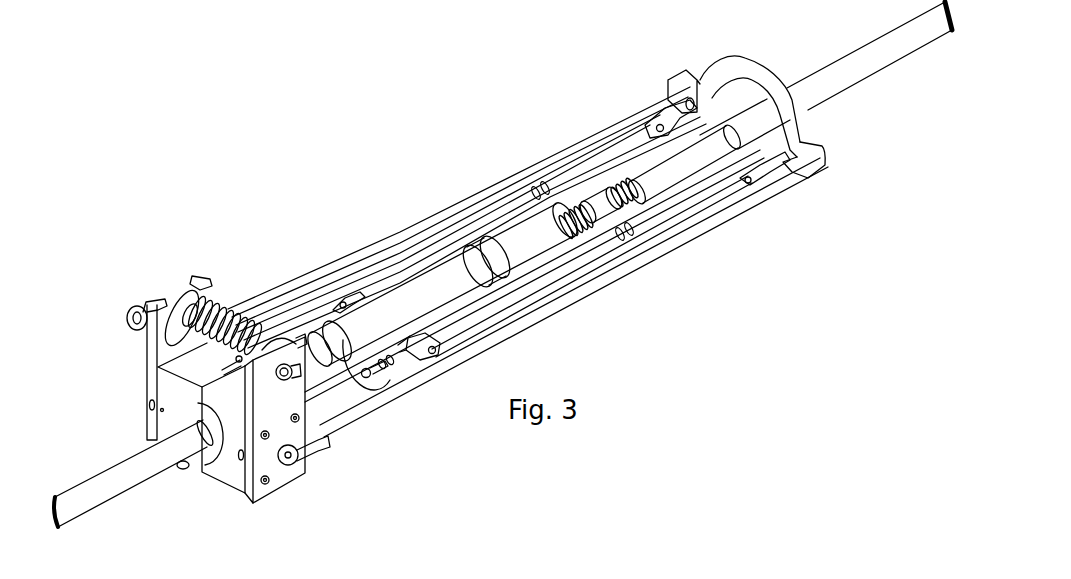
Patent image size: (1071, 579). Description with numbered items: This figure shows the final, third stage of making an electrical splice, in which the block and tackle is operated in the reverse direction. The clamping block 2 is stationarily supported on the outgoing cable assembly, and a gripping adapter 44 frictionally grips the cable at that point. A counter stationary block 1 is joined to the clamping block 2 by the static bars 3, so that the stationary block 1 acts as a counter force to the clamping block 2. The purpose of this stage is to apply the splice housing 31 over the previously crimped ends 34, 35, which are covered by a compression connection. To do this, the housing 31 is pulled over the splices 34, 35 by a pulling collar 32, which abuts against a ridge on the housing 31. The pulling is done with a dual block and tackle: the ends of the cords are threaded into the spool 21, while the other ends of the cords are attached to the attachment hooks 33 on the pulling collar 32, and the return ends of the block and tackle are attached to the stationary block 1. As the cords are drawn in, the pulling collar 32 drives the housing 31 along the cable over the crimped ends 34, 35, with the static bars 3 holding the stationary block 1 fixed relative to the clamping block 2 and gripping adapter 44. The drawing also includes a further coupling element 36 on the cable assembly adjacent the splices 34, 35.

The counter stationary block 1 is at (795, 137).
The clamping block 2 is at (283, 480).
The static bars 3 is at (325, 293).
The spool 21 is at (182, 317).
The splice housing 31 is at (430, 280).
The pulling collar 32 is at (360, 388).
The attachment hooks 33 is at (393, 367).
The crimped end 34 is at (572, 215).
The crimped end 35 is at (598, 200).
The coupling nut 36 is at (623, 190).
The gripping adapter 44 is at (215, 452).